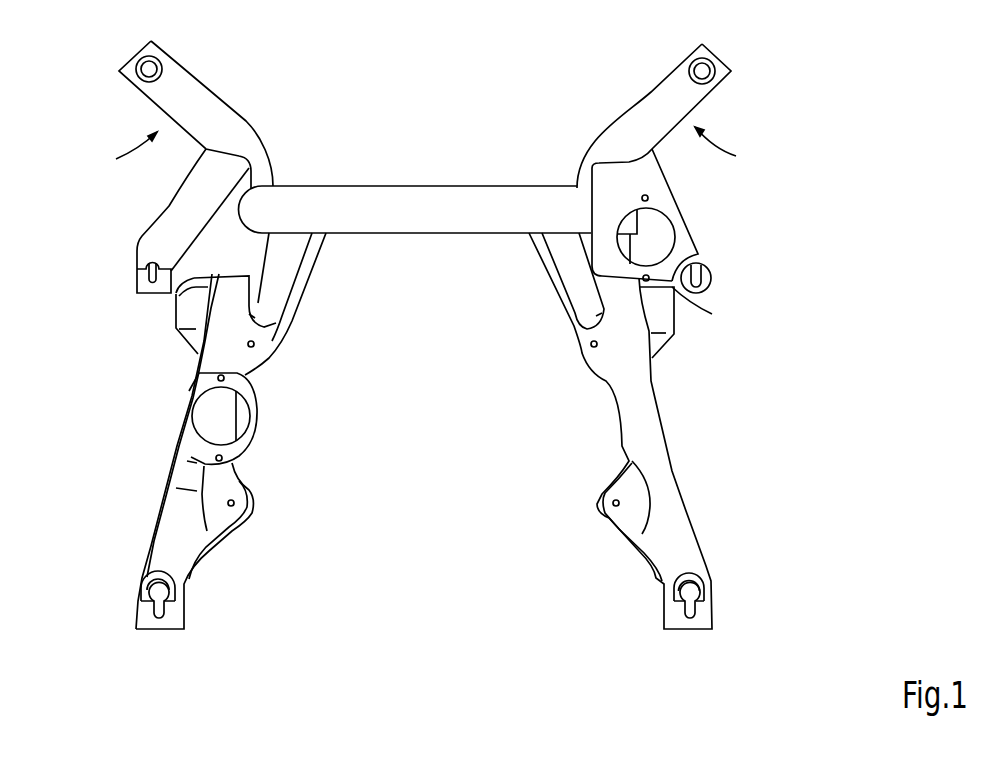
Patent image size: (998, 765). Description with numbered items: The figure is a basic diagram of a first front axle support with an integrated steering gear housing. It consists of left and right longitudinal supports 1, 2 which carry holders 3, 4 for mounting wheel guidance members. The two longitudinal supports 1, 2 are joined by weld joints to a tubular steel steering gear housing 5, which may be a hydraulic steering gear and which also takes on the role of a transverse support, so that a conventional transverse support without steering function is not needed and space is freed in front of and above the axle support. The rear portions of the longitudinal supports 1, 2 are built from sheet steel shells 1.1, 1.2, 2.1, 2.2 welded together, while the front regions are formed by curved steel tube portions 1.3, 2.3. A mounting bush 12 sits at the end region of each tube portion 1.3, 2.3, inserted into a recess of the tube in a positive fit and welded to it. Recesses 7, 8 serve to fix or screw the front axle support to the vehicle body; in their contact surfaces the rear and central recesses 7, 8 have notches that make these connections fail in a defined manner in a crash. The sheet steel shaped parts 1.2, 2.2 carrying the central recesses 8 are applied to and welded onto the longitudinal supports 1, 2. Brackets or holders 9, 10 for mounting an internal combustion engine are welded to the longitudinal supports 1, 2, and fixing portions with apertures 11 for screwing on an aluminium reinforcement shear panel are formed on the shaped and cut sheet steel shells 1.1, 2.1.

The longitudinal support 1 is at (178, 503).
The sheet steel shell 1.1 is at (178, 545).
The sheet steel shell 1.2 is at (167, 230).
The curved steel tube portion 1.3 is at (193, 95).
The longitudinal support 2 is at (650, 432).
The sheet steel shell 2.1 is at (667, 485).
The sheet steel shell 2.2 is at (713, 313).
The curved steel tube portion 2.3 is at (662, 98).
The holder 3 is at (193, 312).
The holder 4 is at (426, 150).
The steering gear housing 5 is at (430, 203).
The recess 7 is at (158, 597).
The recess 8 is at (150, 277).
The bracket 9 is at (195, 392).
The bracket 10 is at (670, 205).
The aperture 11 is at (256, 345).
The mounting bush 12 is at (138, 63).